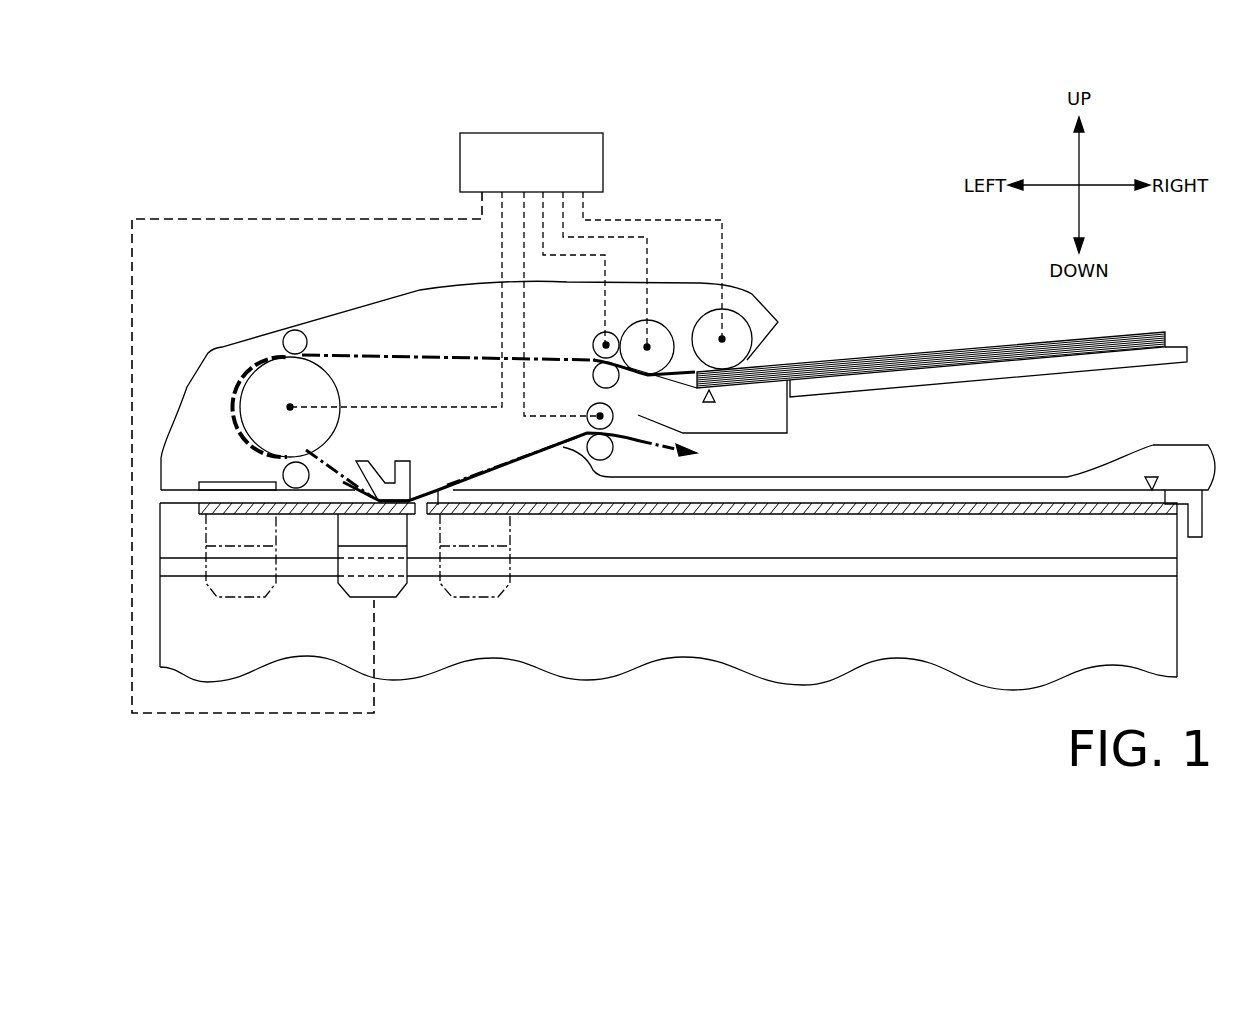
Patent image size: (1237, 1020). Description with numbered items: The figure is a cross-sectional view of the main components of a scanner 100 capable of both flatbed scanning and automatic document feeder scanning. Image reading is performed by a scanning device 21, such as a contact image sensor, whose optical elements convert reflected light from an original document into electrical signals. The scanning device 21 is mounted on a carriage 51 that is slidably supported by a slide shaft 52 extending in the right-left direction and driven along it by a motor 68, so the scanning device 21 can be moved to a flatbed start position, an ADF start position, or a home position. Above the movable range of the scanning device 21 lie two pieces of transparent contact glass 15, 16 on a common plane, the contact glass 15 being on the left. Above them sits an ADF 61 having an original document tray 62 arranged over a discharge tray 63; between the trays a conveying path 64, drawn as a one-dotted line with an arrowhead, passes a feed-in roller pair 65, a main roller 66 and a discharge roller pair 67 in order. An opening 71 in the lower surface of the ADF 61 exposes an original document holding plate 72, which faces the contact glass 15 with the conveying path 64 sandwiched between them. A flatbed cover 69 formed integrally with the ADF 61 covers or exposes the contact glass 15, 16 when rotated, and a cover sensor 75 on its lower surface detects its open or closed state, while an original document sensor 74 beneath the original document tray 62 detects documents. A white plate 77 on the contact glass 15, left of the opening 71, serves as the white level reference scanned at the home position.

The scanner 100 is at (298, 164).
The ADF (automatic document feeder) 61 is at (263, 333).
The main roller 66 is at (253, 392).
The conveying path 64 is at (423, 353).
The motor 68 is at (603, 163).
The feed-in roller pair 65 is at (594, 384).
The original document tray 62 is at (985, 360).
The original document sensor 74 is at (712, 402).
The discharge tray 63 is at (985, 476).
The flatbed cover 69 is at (1079, 497).
The cover sensor 75 is at (1152, 477).
The white plate 77 is at (220, 483).
The original document holding plate 72 is at (403, 464).
The discharge roller pair 67 is at (598, 450).
The scanning device 21 is at (400, 528).
The contact glass 15 is at (305, 514).
The opening 71 is at (365, 514).
The contact glass 16 is at (903, 516).
The slide shaft 52 is at (680, 577).
The carriage 51 is at (402, 528).